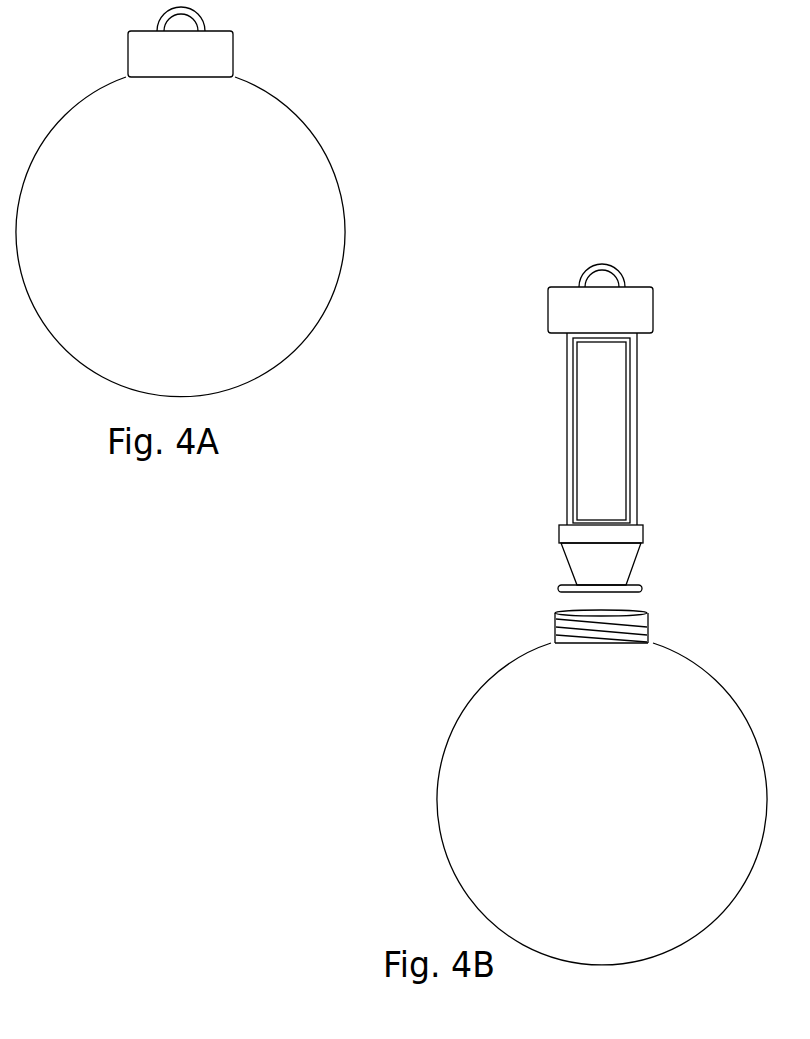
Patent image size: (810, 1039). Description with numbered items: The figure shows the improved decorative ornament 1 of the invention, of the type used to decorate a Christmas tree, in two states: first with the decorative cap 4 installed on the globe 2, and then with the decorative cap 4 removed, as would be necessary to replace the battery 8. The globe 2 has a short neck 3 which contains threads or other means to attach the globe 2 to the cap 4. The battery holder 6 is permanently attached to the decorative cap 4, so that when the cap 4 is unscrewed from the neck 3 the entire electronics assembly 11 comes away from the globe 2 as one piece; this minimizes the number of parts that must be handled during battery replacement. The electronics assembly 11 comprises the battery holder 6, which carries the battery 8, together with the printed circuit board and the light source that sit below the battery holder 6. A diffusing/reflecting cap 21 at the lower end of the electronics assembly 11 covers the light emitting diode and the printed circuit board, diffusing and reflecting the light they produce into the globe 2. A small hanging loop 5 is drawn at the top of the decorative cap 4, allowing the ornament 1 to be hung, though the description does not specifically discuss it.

In FIG. 4A, the ornament 1 is at (308, 95).
In FIG. 4B, the globe 2 is at (581, 785).
In FIG. 4B, the neck 3 is at (648, 616).
In FIG. 4B, the decorative cap 4 is at (632, 306).
In FIG. 4B, the hanging ring 5 is at (605, 265).
In FIG. 4B, the battery holder 6 is at (567, 460).
In FIG. 4B, the battery 8 is at (597, 410).
In FIG. 4B, the electronics assembly 11 is at (615, 386).
In FIG. 4B, the diffusing/reflecting cap 21 is at (602, 558).